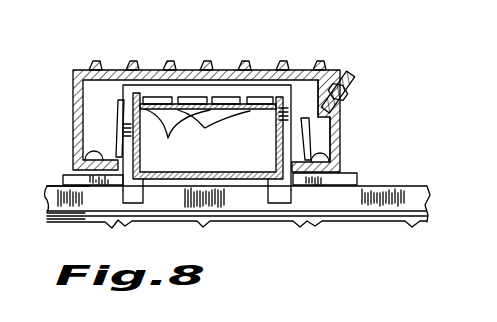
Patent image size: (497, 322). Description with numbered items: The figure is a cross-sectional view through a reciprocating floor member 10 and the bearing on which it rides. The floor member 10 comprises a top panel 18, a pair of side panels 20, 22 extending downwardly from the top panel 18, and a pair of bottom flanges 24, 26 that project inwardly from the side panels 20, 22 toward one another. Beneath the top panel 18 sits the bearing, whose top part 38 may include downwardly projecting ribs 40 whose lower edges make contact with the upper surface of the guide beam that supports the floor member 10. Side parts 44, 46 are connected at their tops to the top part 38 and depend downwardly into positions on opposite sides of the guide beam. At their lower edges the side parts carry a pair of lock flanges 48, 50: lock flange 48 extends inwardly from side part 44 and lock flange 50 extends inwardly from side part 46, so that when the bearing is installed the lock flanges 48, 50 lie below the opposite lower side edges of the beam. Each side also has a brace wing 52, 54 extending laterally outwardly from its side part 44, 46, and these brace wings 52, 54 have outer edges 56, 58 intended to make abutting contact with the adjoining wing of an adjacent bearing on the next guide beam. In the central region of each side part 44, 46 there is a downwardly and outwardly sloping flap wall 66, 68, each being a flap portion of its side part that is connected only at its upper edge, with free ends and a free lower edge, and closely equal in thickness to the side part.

The floor member 10 is at (337, 62).
The top panel 18 is at (190, 69).
The side panel 20 is at (125, 107).
The side panel 22 is at (333, 152).
The bottom flange 24 is at (88, 156).
The bottom flange 26 is at (358, 173).
The top part 38 is at (266, 72).
The ribs 40 is at (267, 115).
The side part 44 is at (78, 84).
The side part 46 is at (298, 126).
The lock flange 48 is at (147, 198).
The lock flange 50 is at (272, 205).
The brace wing 52 is at (80, 178).
The brace wing 54 is at (322, 182).
The outer edge 56 is at (65, 178).
The outer edge 58 is at (361, 186).
The flap wall 66 is at (117, 133).
The flap wall 68 is at (341, 140).